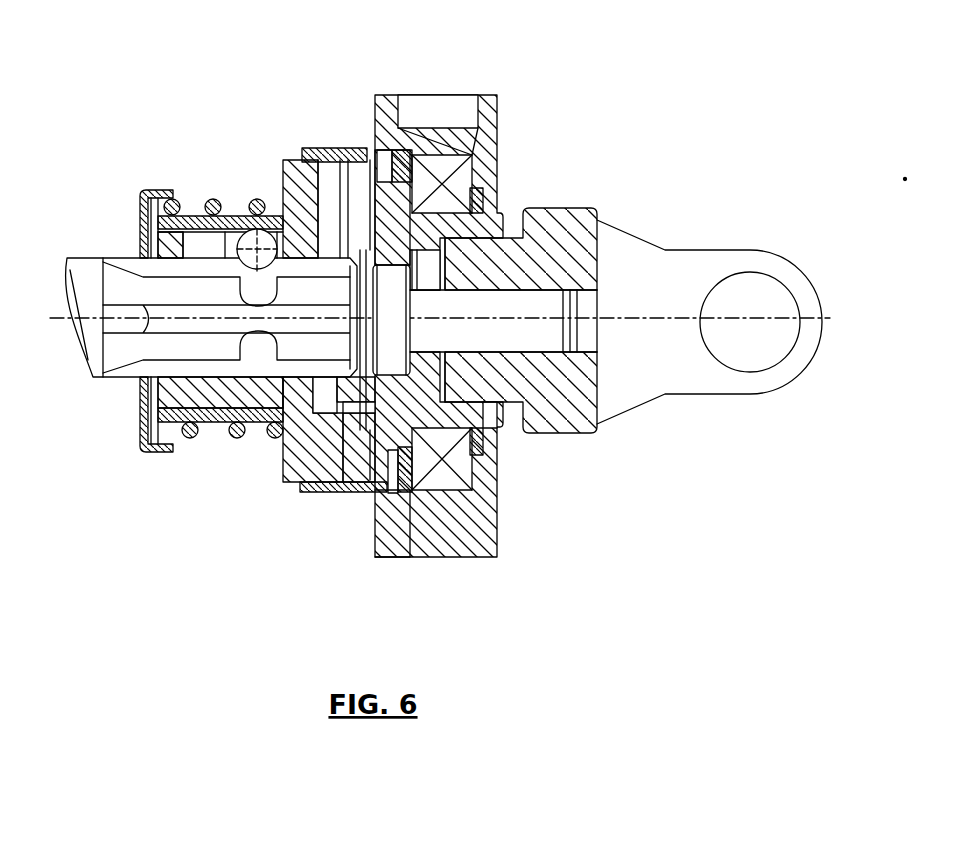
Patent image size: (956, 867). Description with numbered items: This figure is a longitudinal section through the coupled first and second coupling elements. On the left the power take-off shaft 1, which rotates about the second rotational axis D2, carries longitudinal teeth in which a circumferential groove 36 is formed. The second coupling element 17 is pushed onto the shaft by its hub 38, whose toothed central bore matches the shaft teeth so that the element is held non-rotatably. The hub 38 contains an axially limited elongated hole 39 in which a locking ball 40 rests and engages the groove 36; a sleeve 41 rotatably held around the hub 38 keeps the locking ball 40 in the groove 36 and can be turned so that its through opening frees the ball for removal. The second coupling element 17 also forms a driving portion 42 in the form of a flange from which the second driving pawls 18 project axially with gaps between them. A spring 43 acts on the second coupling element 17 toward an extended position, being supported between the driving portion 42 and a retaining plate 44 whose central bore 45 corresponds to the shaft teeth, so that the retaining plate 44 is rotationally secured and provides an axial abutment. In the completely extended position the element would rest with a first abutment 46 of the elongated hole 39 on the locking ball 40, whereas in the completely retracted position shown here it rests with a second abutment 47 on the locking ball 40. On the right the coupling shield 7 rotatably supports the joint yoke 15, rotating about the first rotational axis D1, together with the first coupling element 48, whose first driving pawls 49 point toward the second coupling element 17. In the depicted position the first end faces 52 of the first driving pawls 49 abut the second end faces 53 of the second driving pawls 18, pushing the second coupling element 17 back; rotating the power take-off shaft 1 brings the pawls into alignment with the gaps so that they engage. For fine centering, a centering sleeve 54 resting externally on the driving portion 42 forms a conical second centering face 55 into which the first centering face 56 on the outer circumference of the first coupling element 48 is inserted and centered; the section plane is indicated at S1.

The power take-off shaft 1 is at (93, 270).
The coupling shield 7 is at (437, 540).
The joint yoke 15 is at (572, 417).
The second coupling element 17 is at (297, 188).
The second driving pawls 18 is at (318, 465).
The circumferential groove 36 is at (223, 423).
The hub 38 is at (263, 424).
The elongated hole 39 is at (203, 216).
The locking ball 40 is at (248, 222).
The sleeve 41 is at (210, 238).
The driving portion 42 is at (300, 462).
The spring 43 is at (190, 440).
The retaining plate 44 is at (150, 192).
The central bore 45 is at (125, 380).
The first abutment 46 is at (183, 218).
The second abutment 47 is at (268, 233).
The first coupling element 48 is at (400, 245).
The first driving pawls 49 is at (377, 530).
The first end faces 52 is at (267, 400).
The second end faces 53 is at (333, 485).
The centering sleeve 54 is at (312, 150).
The second centering face 55 is at (358, 180).
The first centering face 56 is at (346, 160).
The first rotational axis D1 is at (742, 325).
The second rotational axis D2 is at (83, 307).
The seal S1 is at (470, 500).